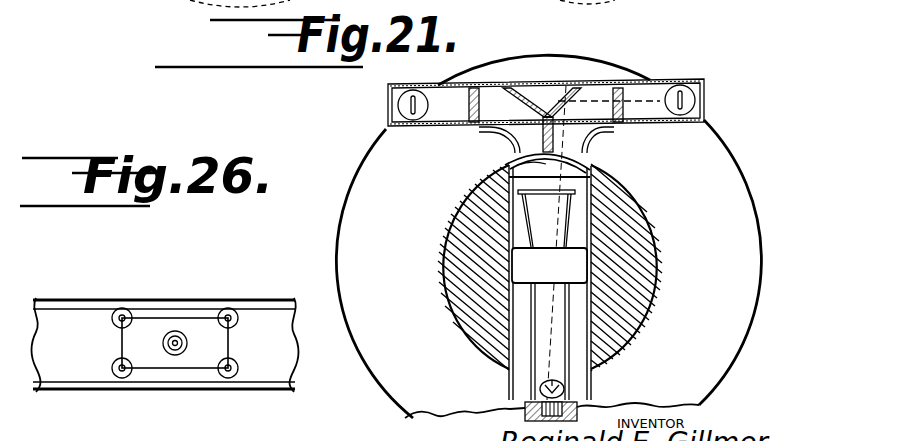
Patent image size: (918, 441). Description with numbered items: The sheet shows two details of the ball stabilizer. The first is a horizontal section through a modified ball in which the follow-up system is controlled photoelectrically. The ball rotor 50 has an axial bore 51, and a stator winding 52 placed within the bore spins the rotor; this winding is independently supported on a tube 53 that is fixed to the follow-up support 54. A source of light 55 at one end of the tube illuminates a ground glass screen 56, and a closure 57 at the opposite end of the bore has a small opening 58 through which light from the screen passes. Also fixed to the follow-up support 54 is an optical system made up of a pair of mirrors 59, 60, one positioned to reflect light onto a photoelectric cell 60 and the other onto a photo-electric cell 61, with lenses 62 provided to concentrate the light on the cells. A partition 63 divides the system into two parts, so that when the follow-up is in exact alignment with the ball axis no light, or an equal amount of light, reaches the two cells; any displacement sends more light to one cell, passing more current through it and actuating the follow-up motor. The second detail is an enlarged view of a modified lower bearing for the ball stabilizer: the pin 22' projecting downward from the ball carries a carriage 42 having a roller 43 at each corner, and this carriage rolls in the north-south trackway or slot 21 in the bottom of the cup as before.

In FIG. 21, the ball rotor 50 is at (657, 252).
In FIG. 21, the axial bore 51 is at (583, 188).
In FIG. 21, the stator winding 52 is at (523, 265).
In FIG. 21, the tube 53 is at (570, 380).
In FIG. 21, the follow-up support 54 is at (548, 236).
In FIG. 21, the source of light 55 is at (528, 392).
In FIG. 21, the ground glass screen 56 is at (517, 193).
In FIG. 21, the closure 57 is at (510, 173).
In FIG. 21, the small opening 58 is at (508, 164).
In FIG. 21, the mirror 59 is at (523, 87).
In FIG. 21, the mirror and photoelectric cell 60 is at (562, 93).
In FIG. 21, the photo-electric cell 61 is at (389, 124).
In FIG. 21, the lenses 62 is at (473, 86).
In FIG. 21, the partition 63 is at (543, 126).
In FIG. 26, the slot 21 is at (165, 345).
In FIG. 26, the carriage 42 is at (152, 323).
In FIG. 26, the roller 43 is at (235, 361).
In FIG. 26, the pin 22' is at (179, 381).